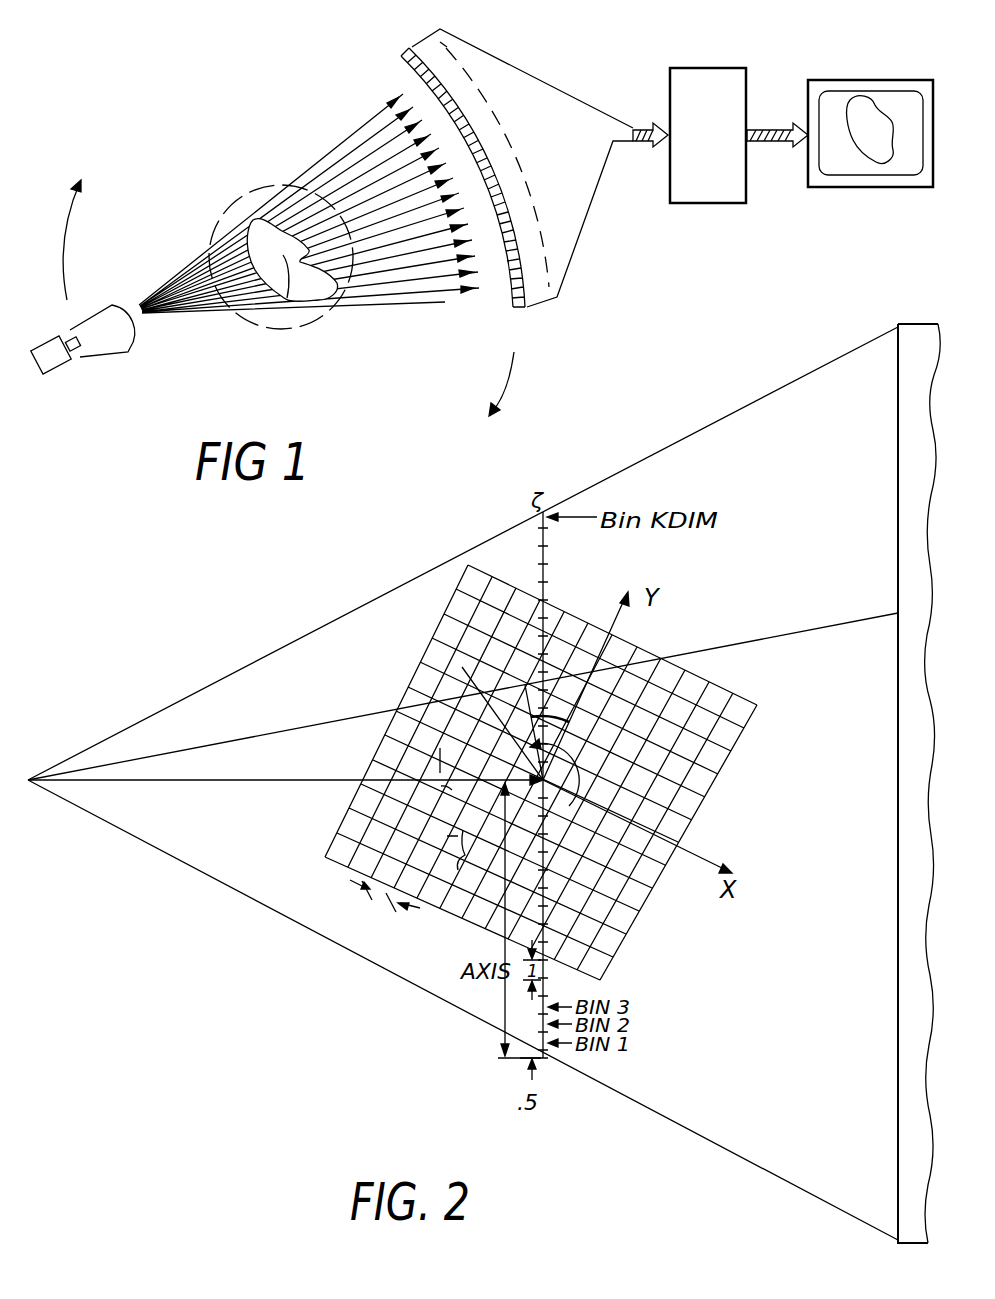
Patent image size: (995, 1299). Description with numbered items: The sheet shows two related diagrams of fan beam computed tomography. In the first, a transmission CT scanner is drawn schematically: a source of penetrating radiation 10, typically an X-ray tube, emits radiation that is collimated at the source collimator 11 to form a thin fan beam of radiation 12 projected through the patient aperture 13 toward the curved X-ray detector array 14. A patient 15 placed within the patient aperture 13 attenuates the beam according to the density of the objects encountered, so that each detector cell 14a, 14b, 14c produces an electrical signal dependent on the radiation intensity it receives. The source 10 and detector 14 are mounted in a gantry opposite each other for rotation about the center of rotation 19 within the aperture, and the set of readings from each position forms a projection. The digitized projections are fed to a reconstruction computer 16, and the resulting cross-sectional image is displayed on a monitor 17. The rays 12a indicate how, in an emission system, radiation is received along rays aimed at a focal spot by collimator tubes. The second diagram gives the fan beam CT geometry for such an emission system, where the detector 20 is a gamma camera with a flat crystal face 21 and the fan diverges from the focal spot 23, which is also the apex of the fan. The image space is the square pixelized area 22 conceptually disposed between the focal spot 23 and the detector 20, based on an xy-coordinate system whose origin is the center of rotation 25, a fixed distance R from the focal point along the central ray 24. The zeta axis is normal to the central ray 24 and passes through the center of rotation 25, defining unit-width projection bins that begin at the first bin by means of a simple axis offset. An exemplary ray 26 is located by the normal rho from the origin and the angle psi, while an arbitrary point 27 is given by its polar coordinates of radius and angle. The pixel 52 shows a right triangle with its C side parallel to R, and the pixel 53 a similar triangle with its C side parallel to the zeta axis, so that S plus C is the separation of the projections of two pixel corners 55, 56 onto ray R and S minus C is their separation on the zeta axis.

In FIG. 1, the source of penetrating radiation 10 is at (60, 372).
In FIG. 1, the source collimator 11 is at (120, 357).
In FIG. 1, the fan beam of radiation 12 is at (196, 322).
In FIG. 1, the rays 12a is at (438, 298).
In FIG. 1, the patient aperture 13 is at (212, 227).
In FIG. 1, the X-ray detector array 14 is at (411, 45).
In FIG. 1, the detector cell 14a is at (489, 110).
In FIG. 1, the detector cell 14b is at (478, 133).
In FIG. 1, the detector cell 14c is at (493, 163).
In FIG. 1, the patient 15 is at (262, 212).
In FIG. 1, the reconstruction computer 16 is at (702, 50).
In FIG. 1, the monitor 17 is at (845, 98).
In FIG. 1, the center of rotation 19 is at (292, 322).
In FIG. 2, the detector 20 is at (840, 1226).
In FIG. 2, the crystal face 21 is at (897, 1214).
In FIG. 2, the pixelized area 22 is at (673, 637).
In FIG. 2, the focal spot 23 is at (33, 772).
In FIG. 2, the central ray 24 is at (172, 781).
In FIG. 2, the center of rotation 25 is at (566, 808).
In FIG. 2, the ray 26 is at (818, 626).
In FIG. 2, the point 27 is at (462, 667).
In FIG. 2, the pixel 52 is at (434, 766).
In FIG. 2, the pixel 53 is at (470, 860).
In FIG. 2, the pixel corner 55 is at (345, 795).
In FIG. 2, the pixel corner 56 is at (388, 793).